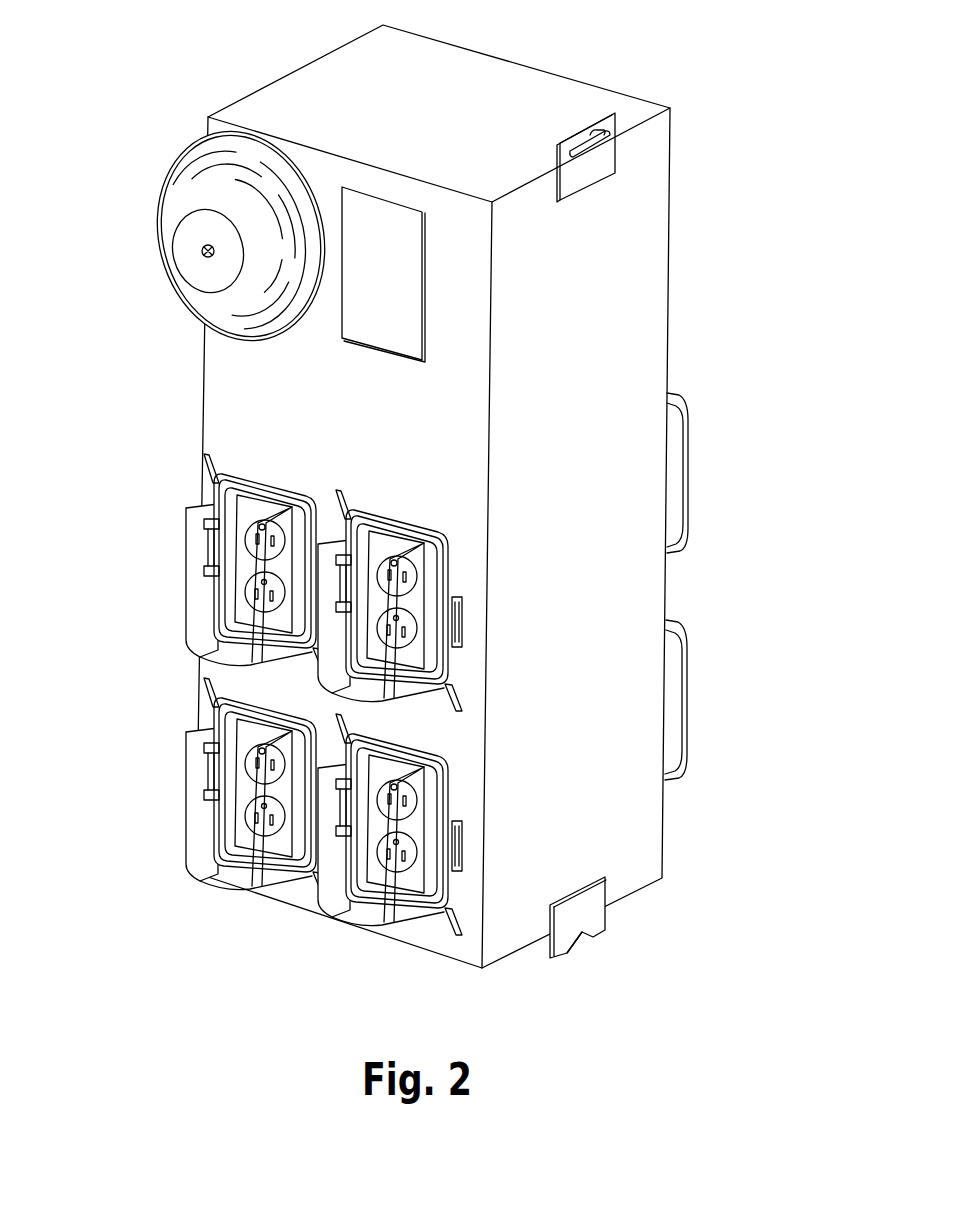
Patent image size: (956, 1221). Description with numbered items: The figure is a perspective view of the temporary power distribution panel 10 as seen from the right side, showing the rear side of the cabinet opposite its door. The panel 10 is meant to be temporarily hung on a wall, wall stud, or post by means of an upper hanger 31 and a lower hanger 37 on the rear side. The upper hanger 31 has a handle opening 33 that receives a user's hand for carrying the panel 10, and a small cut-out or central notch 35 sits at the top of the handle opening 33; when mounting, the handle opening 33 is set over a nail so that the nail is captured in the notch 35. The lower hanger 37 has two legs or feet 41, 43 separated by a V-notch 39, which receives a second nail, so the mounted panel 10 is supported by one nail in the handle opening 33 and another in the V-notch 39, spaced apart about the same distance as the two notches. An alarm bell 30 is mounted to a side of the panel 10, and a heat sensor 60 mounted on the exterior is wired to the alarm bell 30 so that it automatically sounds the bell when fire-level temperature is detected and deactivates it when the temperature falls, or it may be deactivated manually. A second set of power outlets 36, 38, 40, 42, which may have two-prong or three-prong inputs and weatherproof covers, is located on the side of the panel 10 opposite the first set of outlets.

The temporary power distribution panel 10 is at (771, 228).
The alarm bell 30 is at (183, 193).
The upper hanger 31 is at (635, 119).
The handle opening 33 is at (616, 135).
The central notch 35 is at (594, 130).
The power outlet 36 is at (190, 580).
The lower hanger 37 is at (610, 906).
The power outlet 38 is at (388, 530).
The V-notch 39 is at (581, 938).
The power outlet 40 is at (188, 783).
The leg or foot 41 is at (563, 945).
The power outlet 42 is at (338, 905).
The leg or foot 43 is at (604, 917).
The heat sensor 60 is at (380, 215).